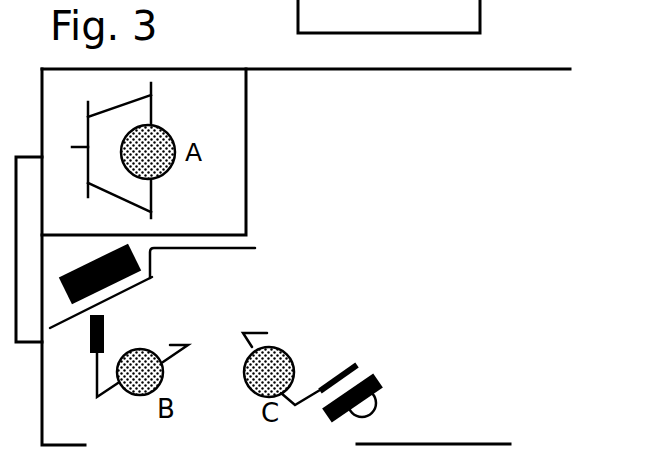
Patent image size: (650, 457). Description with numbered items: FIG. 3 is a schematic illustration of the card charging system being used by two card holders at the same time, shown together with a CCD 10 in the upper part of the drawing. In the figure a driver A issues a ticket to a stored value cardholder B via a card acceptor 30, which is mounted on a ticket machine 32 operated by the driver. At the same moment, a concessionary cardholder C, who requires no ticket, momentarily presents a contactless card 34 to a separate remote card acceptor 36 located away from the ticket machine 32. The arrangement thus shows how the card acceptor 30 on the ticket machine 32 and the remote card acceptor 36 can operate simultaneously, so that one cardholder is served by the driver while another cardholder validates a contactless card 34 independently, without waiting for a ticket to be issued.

The CCD image sensor 10 is at (471, 24).
The card acceptor 30 is at (118, 285).
The ticket machine 32 is at (141, 256).
The contactless card 34 is at (337, 373).
The remote card acceptor 36 is at (382, 379).